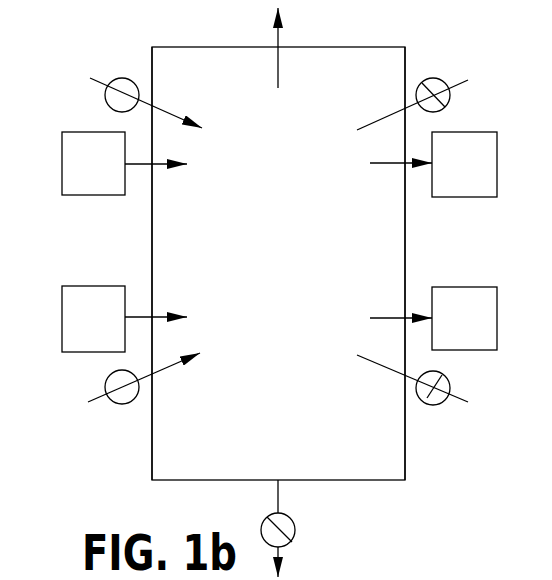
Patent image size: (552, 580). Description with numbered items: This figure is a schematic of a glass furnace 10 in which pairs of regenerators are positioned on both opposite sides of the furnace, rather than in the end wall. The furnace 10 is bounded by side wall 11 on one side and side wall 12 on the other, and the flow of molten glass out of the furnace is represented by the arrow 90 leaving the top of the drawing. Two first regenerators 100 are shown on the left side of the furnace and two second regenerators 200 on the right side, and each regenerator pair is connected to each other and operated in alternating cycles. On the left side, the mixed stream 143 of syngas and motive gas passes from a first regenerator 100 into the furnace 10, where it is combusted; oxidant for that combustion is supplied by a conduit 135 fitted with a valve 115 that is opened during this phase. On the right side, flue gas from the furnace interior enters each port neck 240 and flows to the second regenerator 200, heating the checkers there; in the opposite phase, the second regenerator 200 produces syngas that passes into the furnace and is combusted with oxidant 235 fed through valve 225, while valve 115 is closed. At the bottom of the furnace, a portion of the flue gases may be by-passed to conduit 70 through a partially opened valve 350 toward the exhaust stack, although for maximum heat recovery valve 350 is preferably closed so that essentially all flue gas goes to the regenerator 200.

The furnace 10 is at (278, 263).
The side wall 11 is at (152, 418).
The side wall 12 is at (405, 421).
The flow of molten glass 90 is at (298, 48).
The conduit 70 is at (281, 506).
The valve 350 is at (291, 541).
The valve 115 is at (134, 83).
The conduit 135 is at (126, 244).
The first regenerator 100 is at (93, 242).
The mixed stream 143 is at (183, 170).
The oxidant 235 is at (459, 80).
The valve 225 is at (450, 100).
The port neck 240 is at (380, 164).
The second regenerator 200 is at (464, 241).